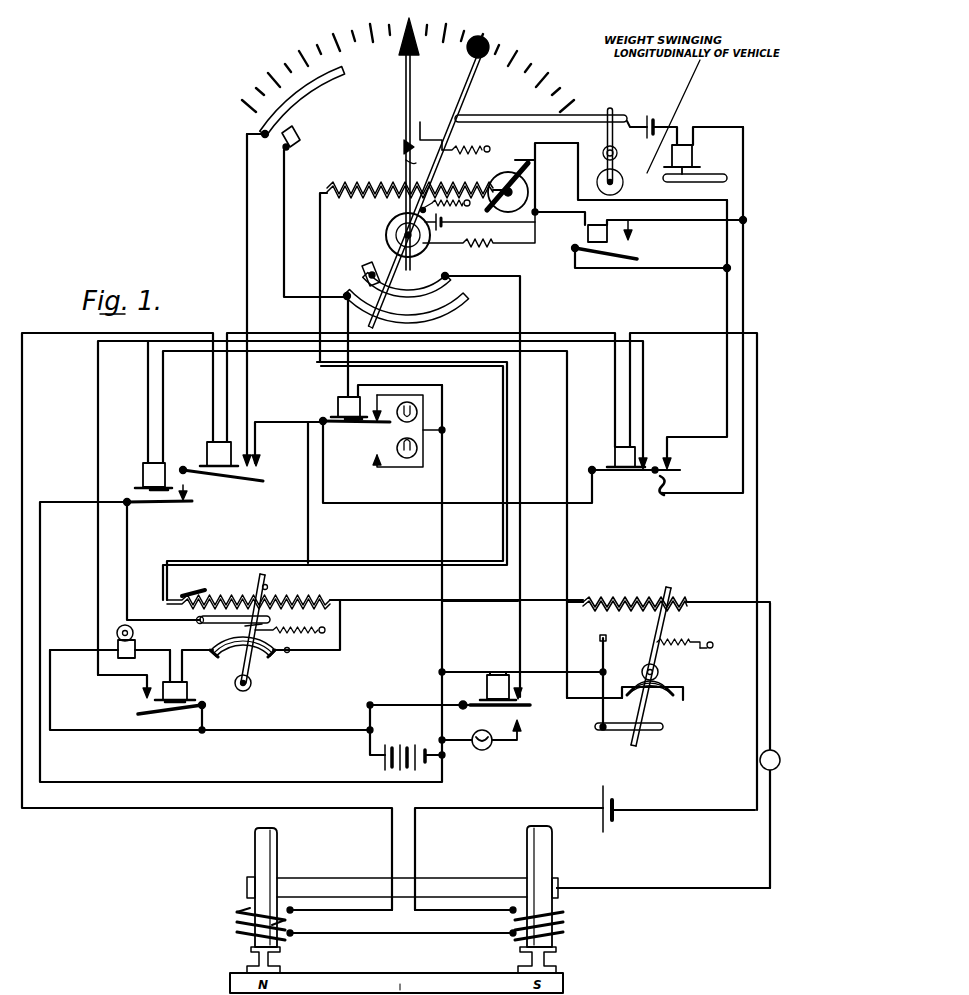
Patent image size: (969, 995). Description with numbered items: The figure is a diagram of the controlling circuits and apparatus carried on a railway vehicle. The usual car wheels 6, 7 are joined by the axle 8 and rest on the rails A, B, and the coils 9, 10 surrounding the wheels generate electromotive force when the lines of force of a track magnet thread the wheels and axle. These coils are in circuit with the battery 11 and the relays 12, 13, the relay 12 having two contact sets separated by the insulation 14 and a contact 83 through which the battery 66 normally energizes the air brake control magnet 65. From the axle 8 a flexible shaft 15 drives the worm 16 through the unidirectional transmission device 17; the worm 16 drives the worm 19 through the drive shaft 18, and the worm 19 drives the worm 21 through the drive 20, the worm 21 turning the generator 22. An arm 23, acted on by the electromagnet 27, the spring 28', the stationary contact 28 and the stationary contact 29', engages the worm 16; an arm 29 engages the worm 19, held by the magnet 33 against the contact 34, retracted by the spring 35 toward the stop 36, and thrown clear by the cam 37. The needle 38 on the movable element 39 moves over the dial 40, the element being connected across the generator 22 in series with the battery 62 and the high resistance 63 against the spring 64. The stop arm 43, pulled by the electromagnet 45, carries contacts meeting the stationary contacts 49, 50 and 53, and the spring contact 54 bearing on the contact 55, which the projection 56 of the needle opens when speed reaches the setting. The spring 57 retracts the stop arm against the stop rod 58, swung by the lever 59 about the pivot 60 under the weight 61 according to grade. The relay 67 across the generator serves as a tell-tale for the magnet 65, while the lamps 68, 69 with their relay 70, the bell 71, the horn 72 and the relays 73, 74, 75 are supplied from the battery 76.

The car wheel 6 is at (256, 862).
The car wheel 7 is at (550, 853).
The axle 8 is at (347, 880).
The coil 9 is at (250, 922).
The coil 10 is at (560, 925).
The battery 11 is at (616, 808).
The relay 12 is at (612, 457).
The relay 13 is at (206, 453).
The insulation 14 is at (655, 468).
The flexible shaft 15 is at (658, 887).
The worm 16 is at (606, 598).
The unidirectional transmission device 17 is at (760, 760).
The drive shaft 18 is at (488, 604).
The worm 19 is at (253, 590).
The drive 20 is at (505, 447).
The worm 21 is at (365, 186).
The generator 22 is at (528, 180).
The arm 23 is at (670, 621).
The electromagnet 27 is at (672, 706).
The stationary contact 28 is at (637, 739).
The spring 28' is at (685, 655).
The arm 29 is at (222, 636).
The stationary contact 29' is at (619, 650).
The magnet 33 is at (218, 658).
The contact 34 is at (205, 615).
The spring 35 is at (290, 618).
The stop 36 is at (268, 583).
The cam 37 is at (210, 585).
The needle 38 is at (404, 118).
The movable element 39 is at (392, 226).
The dial 40 is at (412, 57).
The stop arm 43 is at (460, 84).
The electromagnet 45 is at (372, 276).
The stationary contact 49 is at (293, 140).
The stationary contact 50 is at (310, 85).
The stationary contact 53 is at (454, 303).
The spring contact 54 is at (406, 160).
The contact 55 is at (432, 116).
The projection 56 is at (405, 147).
The spring 57 is at (472, 151).
The stop rod 58 is at (490, 118).
The lever 59 is at (607, 143).
The pivot 60 is at (616, 153).
The weight 61 is at (622, 183).
The battery 62 is at (440, 228).
The high resistance 63 is at (480, 247).
The spring 64 is at (466, 205).
The air brake control magnet 65 is at (695, 154).
The battery 66 is at (652, 116).
The relay 67 is at (588, 236).
The clear signal 68 is at (420, 413).
The danger signal 69 is at (400, 458).
The controlling relay 70 is at (335, 408).
The bell 71 is at (120, 645).
The horn 72 is at (477, 733).
The relay 73 is at (142, 473).
The relay 74 is at (190, 690).
The relay 75 is at (485, 687).
The battery 76 is at (400, 752).
The contact 83 is at (672, 470).
The rail A is at (255, 958).
The rail B is at (548, 960).